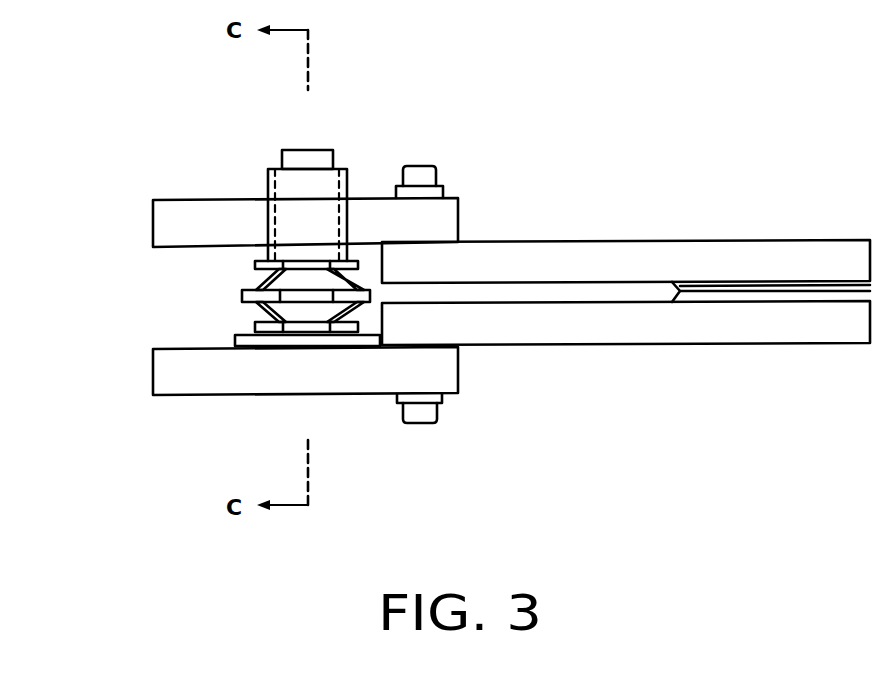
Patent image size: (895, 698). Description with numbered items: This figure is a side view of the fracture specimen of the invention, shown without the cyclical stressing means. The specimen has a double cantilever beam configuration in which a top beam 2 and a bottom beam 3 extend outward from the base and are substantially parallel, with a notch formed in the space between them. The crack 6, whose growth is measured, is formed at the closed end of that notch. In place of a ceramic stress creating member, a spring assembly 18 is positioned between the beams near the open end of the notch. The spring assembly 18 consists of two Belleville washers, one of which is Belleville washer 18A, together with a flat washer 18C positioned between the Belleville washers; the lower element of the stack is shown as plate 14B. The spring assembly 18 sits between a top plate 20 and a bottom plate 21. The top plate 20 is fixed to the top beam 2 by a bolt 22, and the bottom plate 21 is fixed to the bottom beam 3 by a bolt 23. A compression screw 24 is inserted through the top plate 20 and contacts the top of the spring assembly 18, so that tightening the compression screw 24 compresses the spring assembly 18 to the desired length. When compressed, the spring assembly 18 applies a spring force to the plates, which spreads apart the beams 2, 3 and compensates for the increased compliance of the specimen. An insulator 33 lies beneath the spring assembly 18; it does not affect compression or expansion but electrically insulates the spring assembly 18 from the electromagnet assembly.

The top beam 2 is at (510, 255).
The bottom beam 3 is at (572, 328).
The crack 6 is at (718, 293).
The lower plate 14B is at (255, 318).
The spring assembly 18 is at (210, 343).
The Belleville washer 18A is at (268, 276).
The flat washer 18C is at (243, 295).
The top plate 20 is at (153, 227).
The bottom plate 21 is at (153, 382).
The bolt 22 is at (418, 167).
The bolt 23 is at (423, 423).
The compression screw 24 is at (268, 178).
The insulator 33 is at (237, 342).